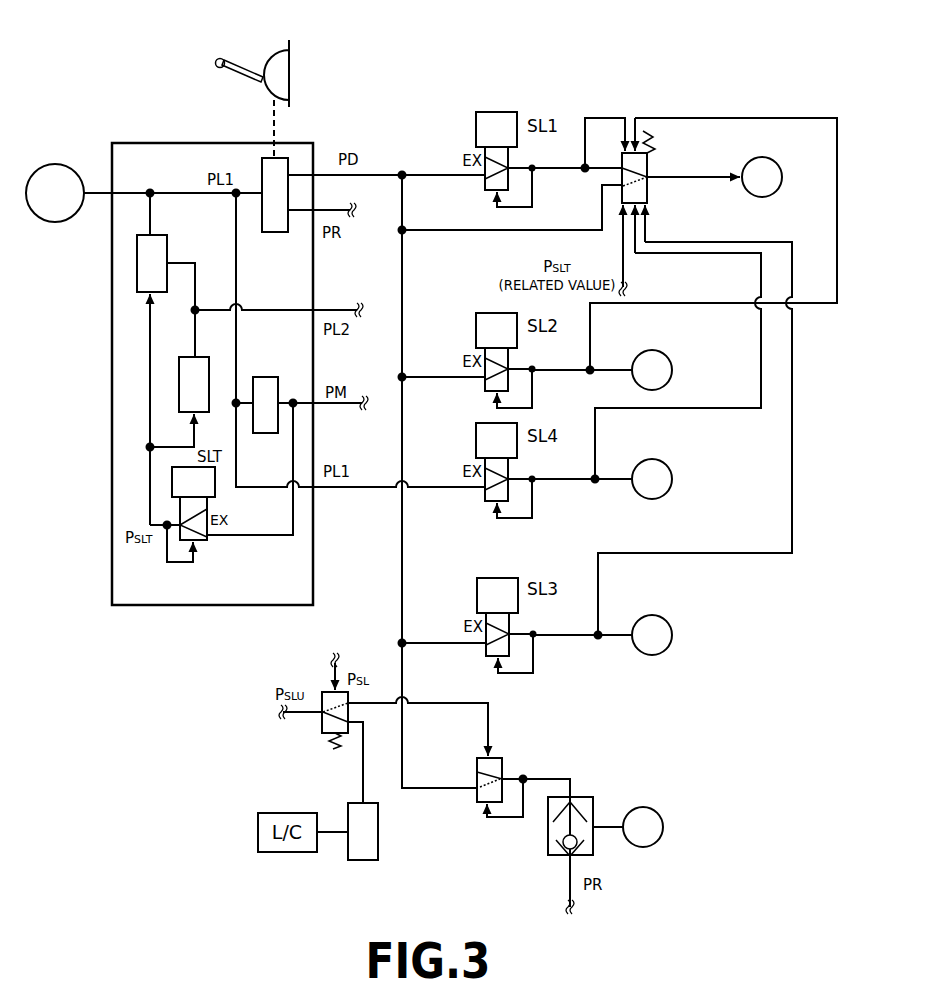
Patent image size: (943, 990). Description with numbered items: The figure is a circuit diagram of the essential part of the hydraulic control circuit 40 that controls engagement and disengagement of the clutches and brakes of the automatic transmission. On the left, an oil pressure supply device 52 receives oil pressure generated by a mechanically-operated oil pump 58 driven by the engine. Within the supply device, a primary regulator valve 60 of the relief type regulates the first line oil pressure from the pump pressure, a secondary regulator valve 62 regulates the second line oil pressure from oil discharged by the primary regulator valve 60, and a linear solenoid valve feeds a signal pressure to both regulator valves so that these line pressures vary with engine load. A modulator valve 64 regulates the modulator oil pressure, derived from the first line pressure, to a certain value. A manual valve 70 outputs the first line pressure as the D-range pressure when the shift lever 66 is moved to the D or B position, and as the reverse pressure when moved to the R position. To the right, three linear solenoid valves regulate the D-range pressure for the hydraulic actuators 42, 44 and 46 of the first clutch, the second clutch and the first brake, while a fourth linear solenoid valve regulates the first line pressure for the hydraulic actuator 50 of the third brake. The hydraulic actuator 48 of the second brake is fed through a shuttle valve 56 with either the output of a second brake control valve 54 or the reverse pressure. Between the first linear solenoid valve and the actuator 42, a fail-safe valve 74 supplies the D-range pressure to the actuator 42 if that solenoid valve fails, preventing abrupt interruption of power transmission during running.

The hydraulic control circuit 40 is at (437, 63).
The hydraulic actuator of clutch C1 42 is at (768, 158).
The hydraulic actuator of clutch C2 44 is at (658, 350).
The hydraulic actuator of brake B1 46 is at (657, 618).
The hydraulic actuator of brake B2 48 is at (645, 808).
The hydraulic actuator of brake B3 50 is at (657, 460).
The oil pressure supply device 52 is at (232, 153).
The second brake control valve 54 is at (495, 828).
The shuttle valve 56 is at (583, 800).
The oil pump 58 is at (58, 172).
The primary regulator valve 60 is at (162, 246).
The secondary regulator valve 62 is at (207, 373).
The modulator valve 64 is at (275, 387).
The shift lever 66 is at (235, 60).
The manual valve 70 is at (272, 226).
The fail-safe valve 74 is at (632, 107).